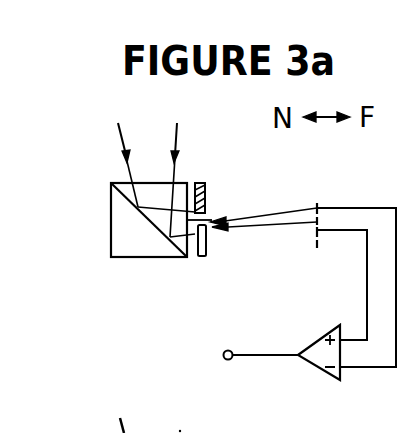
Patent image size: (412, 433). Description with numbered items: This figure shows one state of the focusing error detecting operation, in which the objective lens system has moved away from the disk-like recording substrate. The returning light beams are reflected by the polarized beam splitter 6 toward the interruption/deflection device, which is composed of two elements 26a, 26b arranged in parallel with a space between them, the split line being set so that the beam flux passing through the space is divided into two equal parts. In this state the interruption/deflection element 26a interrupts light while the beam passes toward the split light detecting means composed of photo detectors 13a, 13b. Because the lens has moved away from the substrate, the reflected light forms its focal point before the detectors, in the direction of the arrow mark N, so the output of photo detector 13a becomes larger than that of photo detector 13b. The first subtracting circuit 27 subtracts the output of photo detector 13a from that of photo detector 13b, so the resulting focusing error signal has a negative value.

The polarized beam splitter 6 is at (111, 184).
The interruption/deflection element 26a is at (205, 198).
The interruption/deflection element 26b is at (206, 250).
The photo detector 13a is at (317, 204).
The photo detector 13b is at (317, 247).
The first subtracting circuit 27 is at (312, 344).